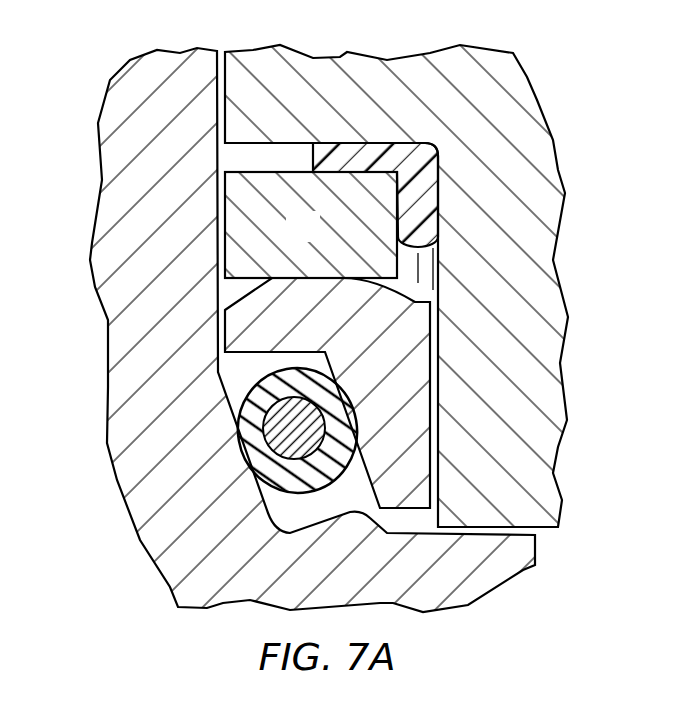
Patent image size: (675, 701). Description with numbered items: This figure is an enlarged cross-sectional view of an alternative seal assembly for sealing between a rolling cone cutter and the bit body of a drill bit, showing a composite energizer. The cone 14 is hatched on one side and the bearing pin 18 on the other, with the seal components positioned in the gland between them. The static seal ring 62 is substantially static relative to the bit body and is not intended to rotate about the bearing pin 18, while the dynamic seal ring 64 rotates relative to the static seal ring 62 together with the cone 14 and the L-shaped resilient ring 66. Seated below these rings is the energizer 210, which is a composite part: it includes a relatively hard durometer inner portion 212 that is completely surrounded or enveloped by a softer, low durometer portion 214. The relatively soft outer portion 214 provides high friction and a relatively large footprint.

The cone 14 is at (359, 56).
The bearing pin 18 is at (100, 212).
The static seal ring 62 is at (415, 325).
The dynamic seal ring 64 is at (318, 240).
The L-shaped resilient ring 66 is at (432, 197).
The energizer 210 is at (266, 474).
The inner portion 212 is at (285, 414).
The low durometer portion 214 is at (270, 463).